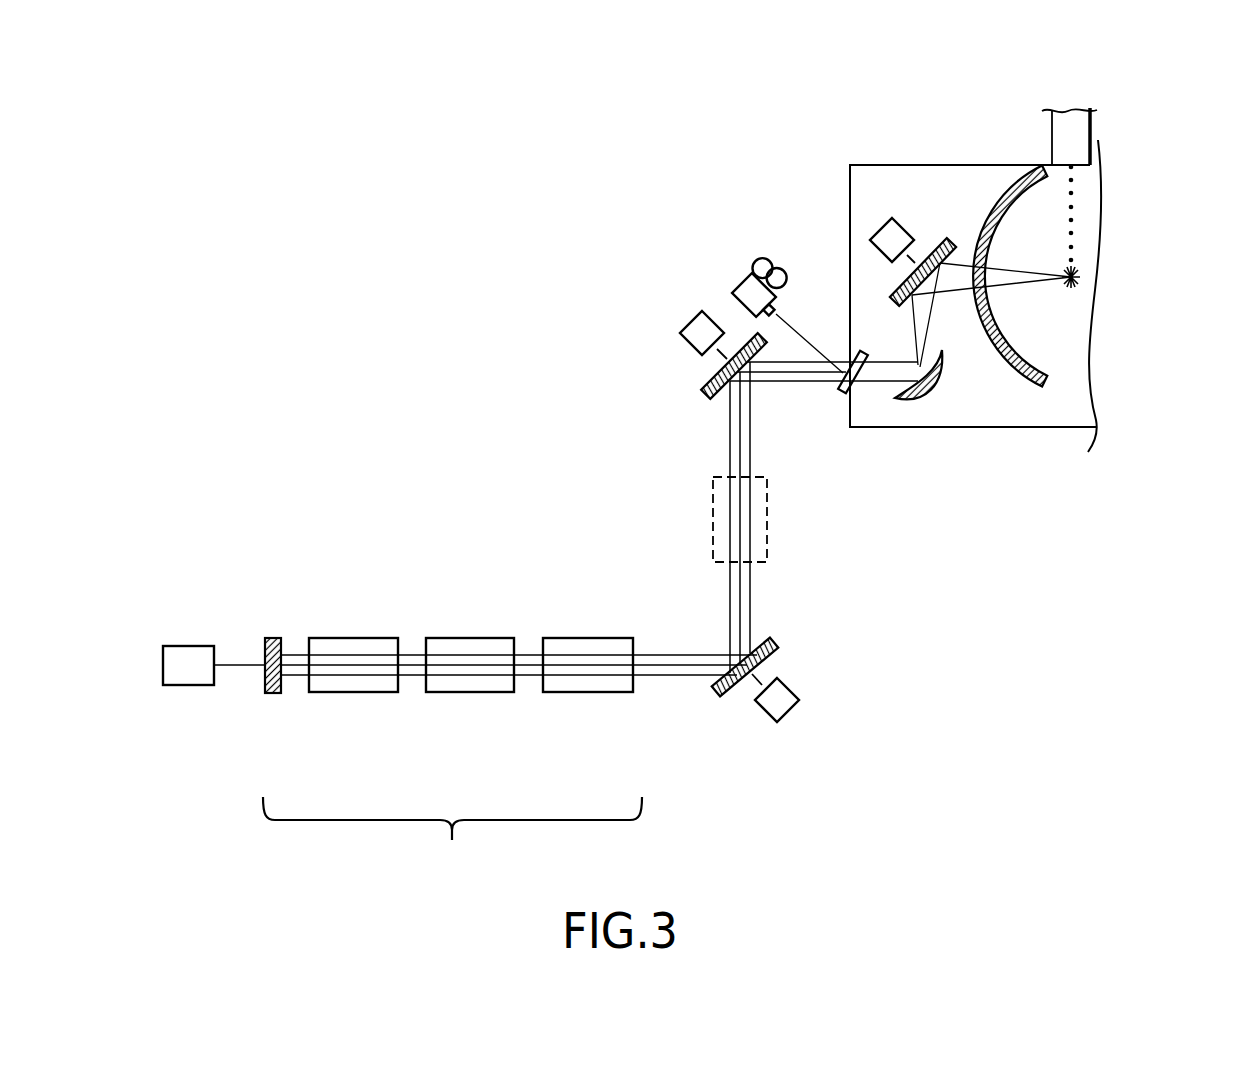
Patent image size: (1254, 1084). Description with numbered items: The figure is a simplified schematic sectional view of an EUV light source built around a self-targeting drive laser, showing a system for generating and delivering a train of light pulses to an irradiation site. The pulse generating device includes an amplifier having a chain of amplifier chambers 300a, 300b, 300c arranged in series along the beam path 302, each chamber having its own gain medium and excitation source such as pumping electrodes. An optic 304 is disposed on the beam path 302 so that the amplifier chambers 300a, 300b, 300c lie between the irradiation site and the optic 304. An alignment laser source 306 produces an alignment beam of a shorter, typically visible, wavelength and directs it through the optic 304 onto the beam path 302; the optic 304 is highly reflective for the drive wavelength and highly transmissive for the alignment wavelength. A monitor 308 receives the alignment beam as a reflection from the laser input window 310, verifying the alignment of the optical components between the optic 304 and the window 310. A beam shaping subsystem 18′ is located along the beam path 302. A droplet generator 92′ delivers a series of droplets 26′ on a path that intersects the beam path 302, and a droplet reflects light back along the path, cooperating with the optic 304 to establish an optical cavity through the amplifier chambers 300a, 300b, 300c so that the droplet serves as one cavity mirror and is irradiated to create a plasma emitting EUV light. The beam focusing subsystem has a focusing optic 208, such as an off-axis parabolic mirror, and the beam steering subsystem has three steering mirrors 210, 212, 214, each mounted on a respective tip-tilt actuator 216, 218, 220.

The beam shaping subsystem 18′ is at (713, 507).
The droplets 26′ is at (1070, 220).
The droplet generator 92′ is at (1093, 125).
The focusing optic 208 is at (927, 388).
The steering mirror 210 is at (772, 640).
The steering mirror 212 is at (712, 382).
The steering mirror 214 is at (952, 245).
The tip-tilt actuator 216 is at (793, 688).
The tip-tilt actuator 218 is at (695, 322).
The tip-tilt actuator 220 is at (883, 227).
The amplifier chamber 300a is at (352, 693).
The amplifier chamber 300b is at (470, 693).
The amplifier chamber 300c is at (588, 693).
The beam path 302 is at (527, 650).
The optic 304 is at (268, 638).
The alignment laser source 306 is at (187, 646).
The monitor 308 is at (737, 278).
The laser input window 310 is at (843, 392).